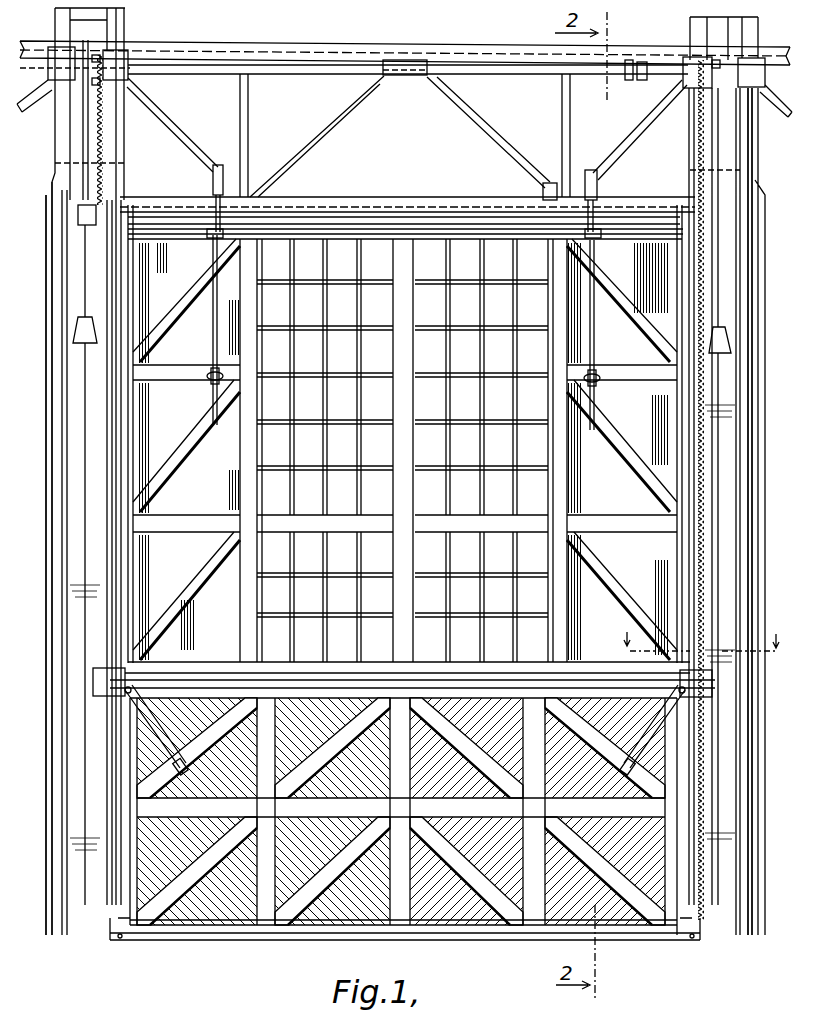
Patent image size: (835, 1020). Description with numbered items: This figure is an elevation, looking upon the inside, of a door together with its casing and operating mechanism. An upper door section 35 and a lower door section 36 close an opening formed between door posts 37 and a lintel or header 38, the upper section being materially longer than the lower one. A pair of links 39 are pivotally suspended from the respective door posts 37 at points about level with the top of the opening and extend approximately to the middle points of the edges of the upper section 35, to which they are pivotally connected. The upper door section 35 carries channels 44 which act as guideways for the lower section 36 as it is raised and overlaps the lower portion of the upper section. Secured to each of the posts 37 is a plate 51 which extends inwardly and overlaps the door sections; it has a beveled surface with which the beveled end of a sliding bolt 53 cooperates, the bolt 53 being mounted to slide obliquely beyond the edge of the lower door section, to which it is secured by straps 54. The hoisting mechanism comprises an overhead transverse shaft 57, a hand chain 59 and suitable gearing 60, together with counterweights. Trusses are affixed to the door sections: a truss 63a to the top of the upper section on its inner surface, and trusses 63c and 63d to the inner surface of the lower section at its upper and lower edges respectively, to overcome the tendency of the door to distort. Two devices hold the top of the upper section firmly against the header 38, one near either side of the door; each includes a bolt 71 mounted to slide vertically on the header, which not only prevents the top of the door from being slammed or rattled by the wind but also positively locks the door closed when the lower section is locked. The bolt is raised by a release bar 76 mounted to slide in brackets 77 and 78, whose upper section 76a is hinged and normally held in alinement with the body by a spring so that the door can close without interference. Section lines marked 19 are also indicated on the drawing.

The overhead transverse shaft 57 is at (510, 76).
The gearing 60 is at (632, 80).
The lintel or header 38 is at (405, 202).
The truss 63a is at (432, 224).
The upper section of release bar 76a is at (214, 212).
The bolt 71 is at (212, 180).
The upper door section 35 is at (248, 257).
The channels 44 is at (120, 570).
The release bar 76 is at (212, 334).
The bracket 77 is at (210, 236).
The bracket 78 is at (212, 384).
The links 39 is at (118, 308).
The hand chain 59 is at (703, 463).
The door posts 37 is at (80, 445).
The section line 19 is at (699, 634).
The truss 63c is at (467, 690).
The plate 51 is at (108, 680).
The lower door section 36 is at (268, 905).
The truss 63d is at (470, 932).
The sliding bolt 53 is at (138, 716).
The straps 54 is at (128, 694).